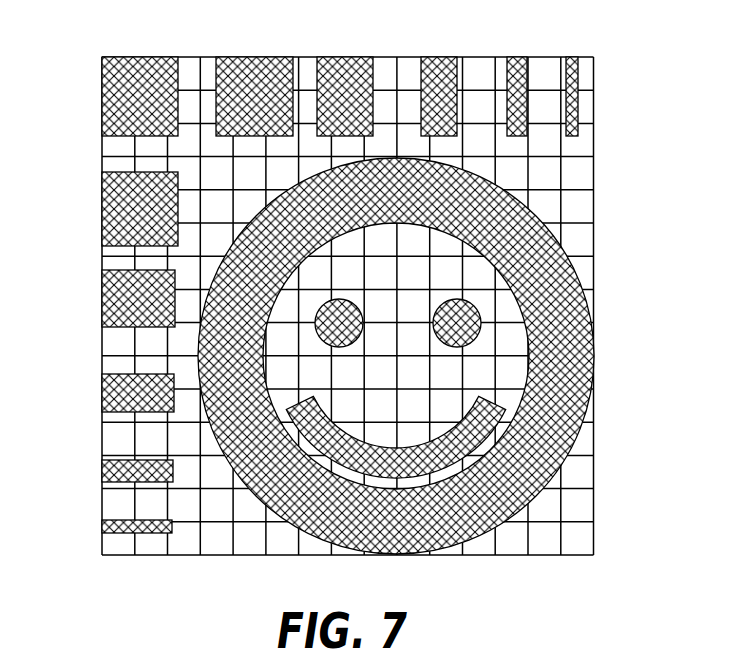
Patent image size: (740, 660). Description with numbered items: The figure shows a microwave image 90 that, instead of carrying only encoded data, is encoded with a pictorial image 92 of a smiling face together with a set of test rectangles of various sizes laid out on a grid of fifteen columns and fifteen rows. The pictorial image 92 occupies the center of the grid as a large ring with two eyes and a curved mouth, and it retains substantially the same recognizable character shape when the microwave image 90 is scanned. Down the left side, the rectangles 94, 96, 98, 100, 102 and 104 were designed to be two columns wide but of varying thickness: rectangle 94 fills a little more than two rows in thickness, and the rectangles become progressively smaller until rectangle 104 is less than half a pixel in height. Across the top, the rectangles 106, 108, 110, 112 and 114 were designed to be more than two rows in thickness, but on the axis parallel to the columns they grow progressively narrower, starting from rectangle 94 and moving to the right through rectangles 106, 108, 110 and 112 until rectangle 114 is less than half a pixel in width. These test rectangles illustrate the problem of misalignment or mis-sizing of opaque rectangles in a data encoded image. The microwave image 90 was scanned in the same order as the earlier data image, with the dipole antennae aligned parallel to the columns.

The microwave image 90 is at (628, 163).
The pictorial image 92 is at (575, 303).
The rectangle 94 is at (138, 57).
The rectangle 96 is at (102, 200).
The rectangle 98 is at (102, 295).
The rectangle 100 is at (103, 393).
The rectangle 102 is at (103, 468).
The rectangle 104 is at (103, 523).
The rectangle 106 is at (250, 57).
The rectangle 108 is at (340, 57).
The rectangle 110 is at (437, 57).
The rectangle 112 is at (515, 57).
The rectangle 114 is at (572, 57).